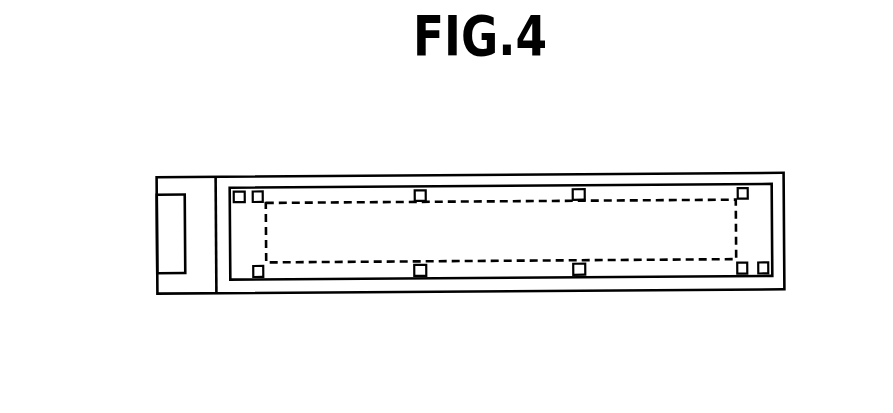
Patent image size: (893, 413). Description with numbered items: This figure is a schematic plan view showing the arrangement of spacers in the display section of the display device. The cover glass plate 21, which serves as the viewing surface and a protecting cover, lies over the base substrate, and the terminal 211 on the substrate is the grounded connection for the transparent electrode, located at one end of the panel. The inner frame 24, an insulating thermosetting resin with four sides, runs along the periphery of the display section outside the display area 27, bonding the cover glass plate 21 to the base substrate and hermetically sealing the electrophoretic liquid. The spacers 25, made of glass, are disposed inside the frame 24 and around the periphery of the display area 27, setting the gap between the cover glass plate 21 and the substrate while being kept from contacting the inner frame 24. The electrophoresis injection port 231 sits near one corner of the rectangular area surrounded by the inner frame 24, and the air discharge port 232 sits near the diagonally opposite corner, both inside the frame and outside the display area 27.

The cover glass plate 21 is at (183, 186).
The terminal 211 is at (163, 213).
The inner frame 24 is at (725, 178).
The spacers 25 is at (422, 190).
The display area 27 is at (500, 228).
The electrophoresis injection port 231 is at (763, 278).
The air discharge port 232 is at (242, 188).